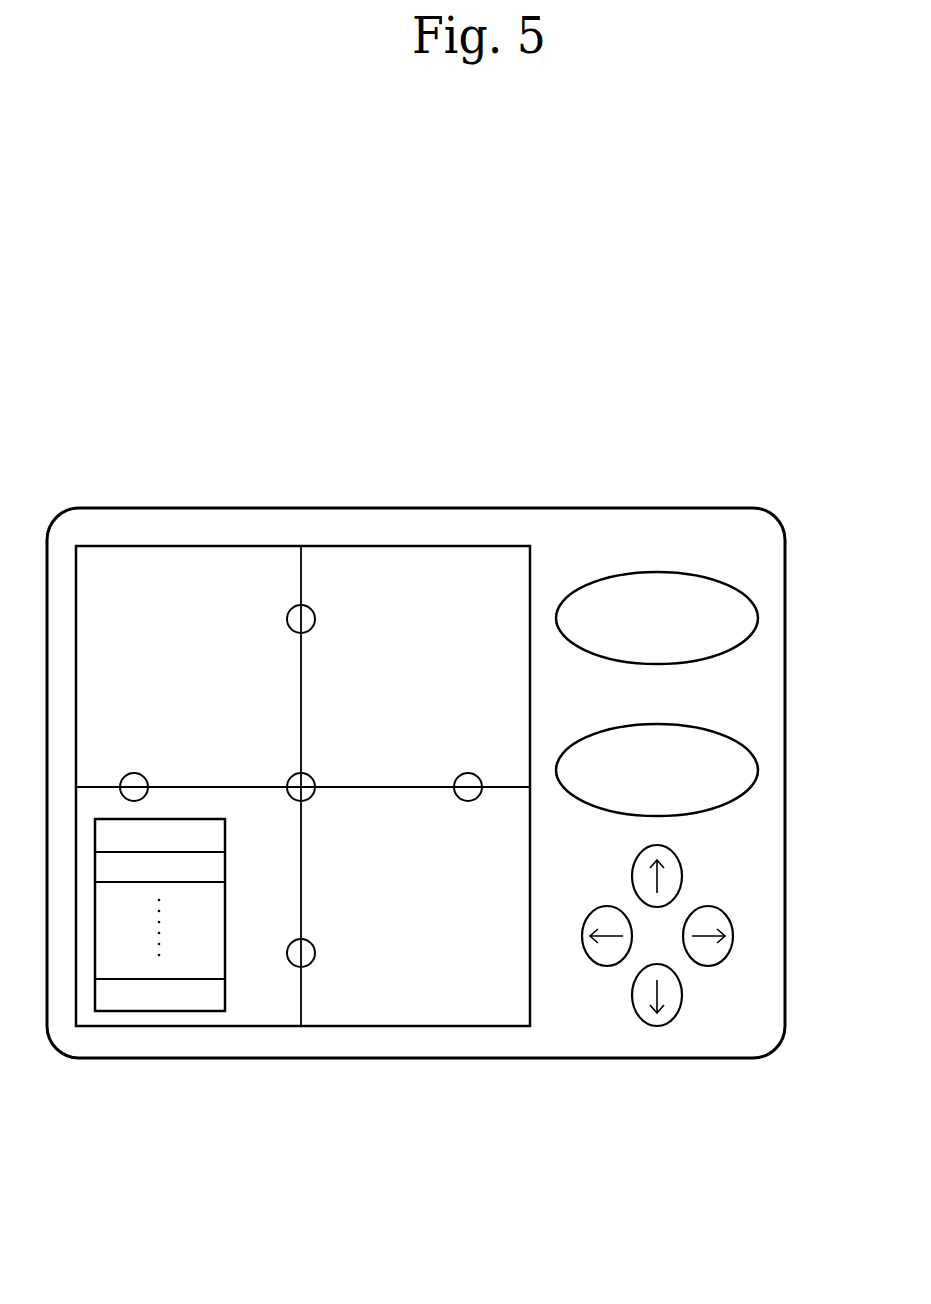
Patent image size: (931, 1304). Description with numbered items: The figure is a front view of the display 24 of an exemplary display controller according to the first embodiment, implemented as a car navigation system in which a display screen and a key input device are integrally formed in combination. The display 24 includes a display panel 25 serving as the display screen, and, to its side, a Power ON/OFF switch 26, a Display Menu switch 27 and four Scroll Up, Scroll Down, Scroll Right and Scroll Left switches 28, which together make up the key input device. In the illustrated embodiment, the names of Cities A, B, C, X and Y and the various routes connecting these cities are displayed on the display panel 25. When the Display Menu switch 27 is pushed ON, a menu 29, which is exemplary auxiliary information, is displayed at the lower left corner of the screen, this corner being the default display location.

The display 24 is at (786, 543).
The display panel 25 is at (476, 1026).
The Power ON/OFF switch 26 is at (758, 617).
The Display Menu switch 27 is at (758, 769).
The Scroll Up, Scroll Down, Scroll Right and Scroll Left switches 28 is at (709, 966).
The menu 29 is at (150, 1012).